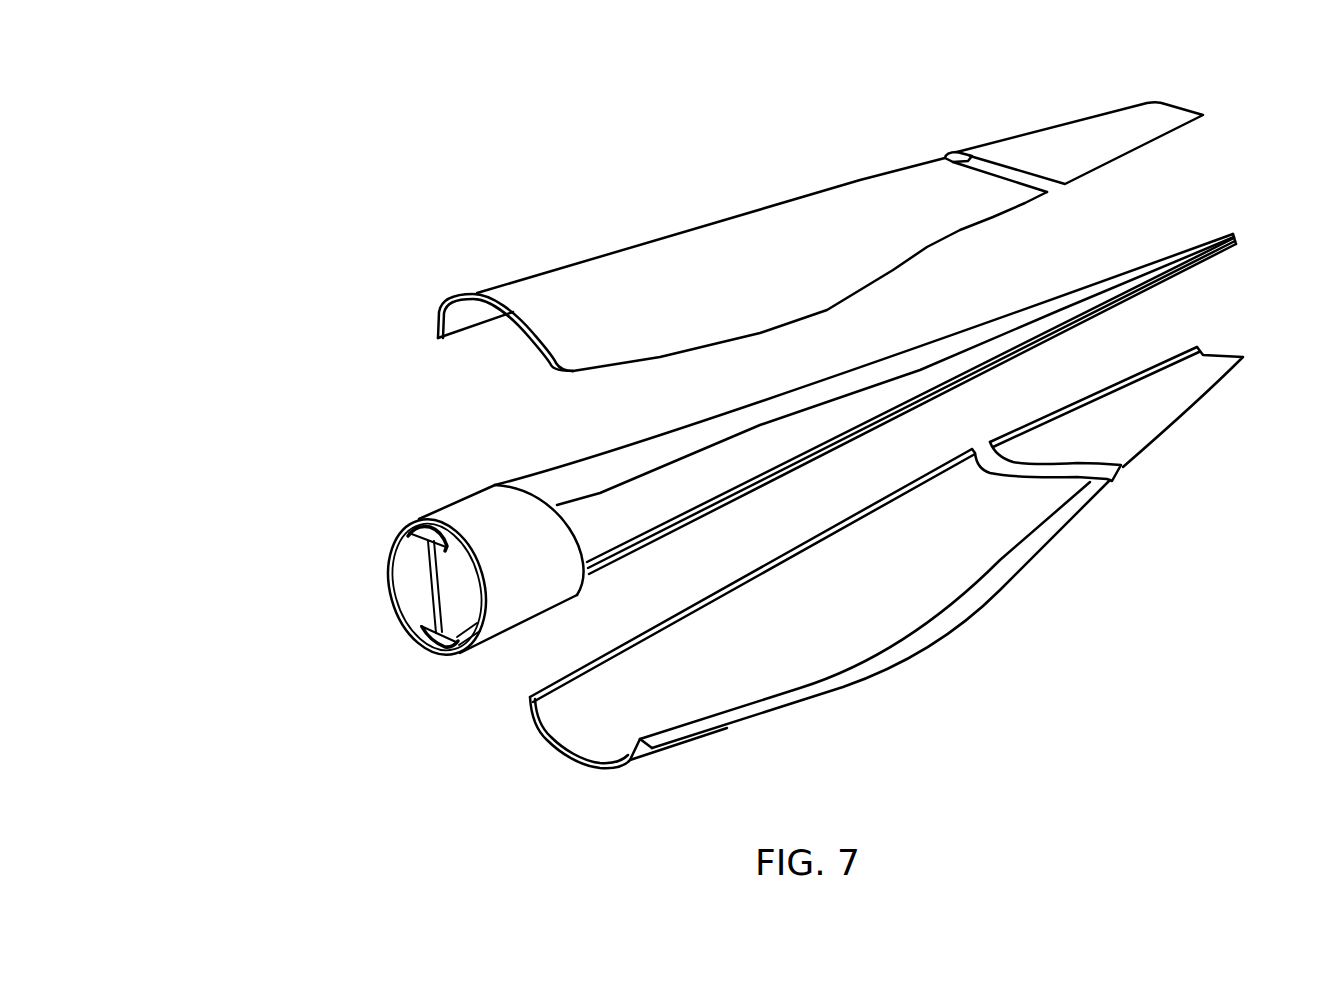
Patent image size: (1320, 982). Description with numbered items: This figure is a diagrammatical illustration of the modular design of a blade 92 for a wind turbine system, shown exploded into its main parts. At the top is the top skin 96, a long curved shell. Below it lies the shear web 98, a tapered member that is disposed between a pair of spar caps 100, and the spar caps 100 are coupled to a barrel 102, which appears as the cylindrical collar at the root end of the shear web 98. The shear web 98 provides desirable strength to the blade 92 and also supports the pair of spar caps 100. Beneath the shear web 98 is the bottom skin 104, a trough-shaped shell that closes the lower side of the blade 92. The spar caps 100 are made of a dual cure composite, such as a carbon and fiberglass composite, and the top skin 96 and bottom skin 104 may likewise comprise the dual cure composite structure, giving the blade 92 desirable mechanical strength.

The blade 92 is at (257, 117).
The top skin 96 is at (625, 249).
The shear web 98 is at (678, 493).
The spar caps 100 is at (430, 541).
The barrel 102 is at (459, 499).
The bottom skin 104 is at (783, 708).